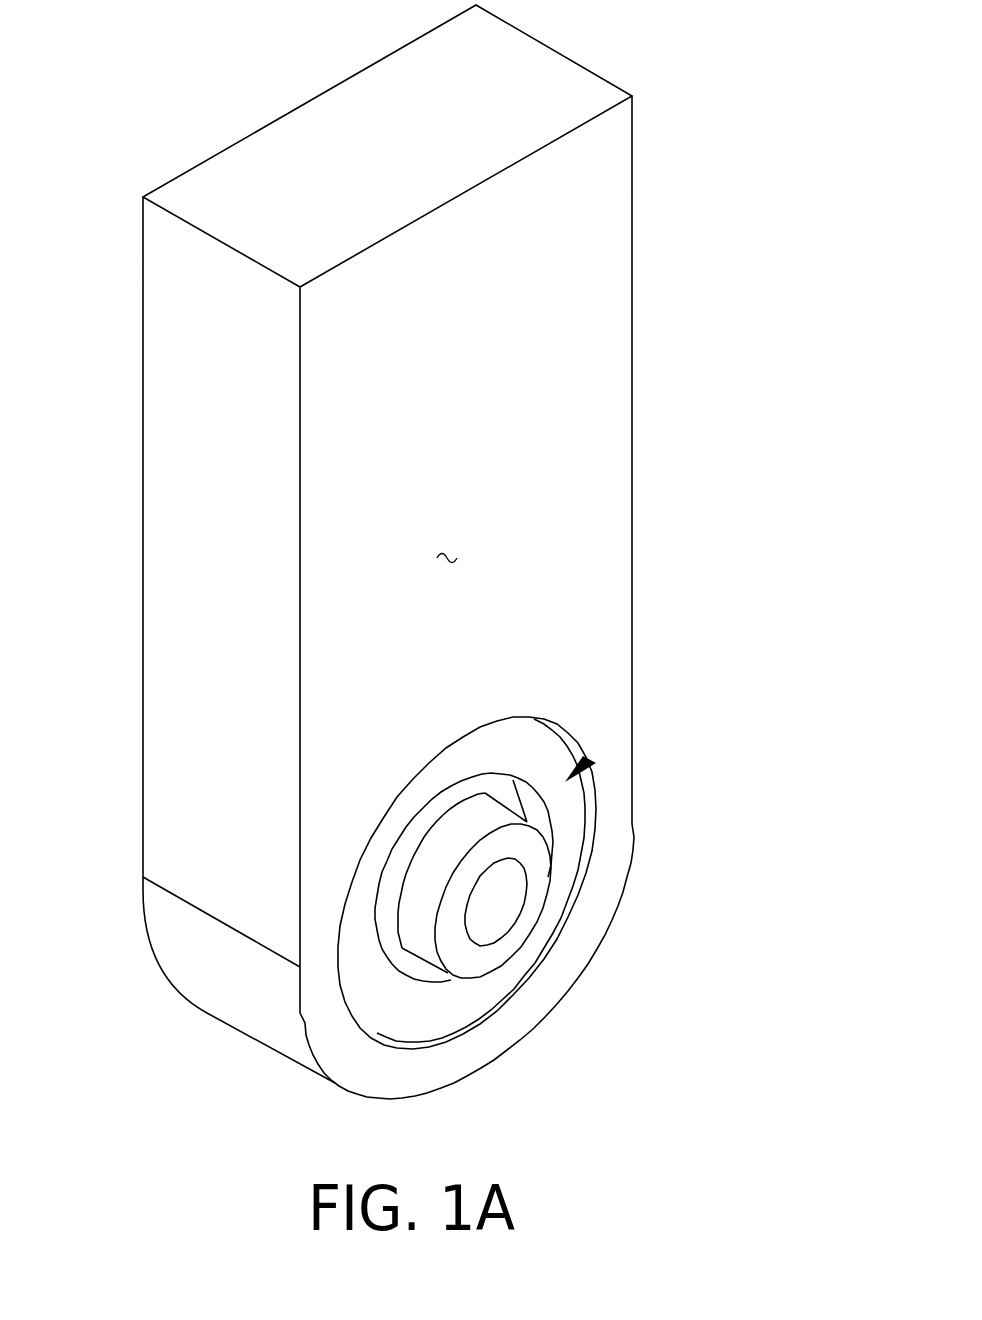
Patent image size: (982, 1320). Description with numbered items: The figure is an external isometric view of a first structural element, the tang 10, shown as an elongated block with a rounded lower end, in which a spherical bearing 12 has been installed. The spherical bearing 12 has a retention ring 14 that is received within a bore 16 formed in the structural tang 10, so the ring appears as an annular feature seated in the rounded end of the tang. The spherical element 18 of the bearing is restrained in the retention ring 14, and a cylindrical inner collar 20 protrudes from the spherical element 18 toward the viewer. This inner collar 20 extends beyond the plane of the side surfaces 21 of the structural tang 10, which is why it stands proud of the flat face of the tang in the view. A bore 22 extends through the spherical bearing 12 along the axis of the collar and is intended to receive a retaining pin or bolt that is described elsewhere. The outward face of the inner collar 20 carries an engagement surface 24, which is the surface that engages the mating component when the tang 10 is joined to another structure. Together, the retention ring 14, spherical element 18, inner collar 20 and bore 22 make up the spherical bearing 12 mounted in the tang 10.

The tang 10 is at (568, 368).
The spherical bearing 12 is at (593, 758).
The retention ring 14 is at (523, 757).
The bore 16 is at (533, 968).
The spherical element 18 is at (387, 930).
The cylindrical inner collar 20 is at (443, 863).
The side surfaces 21 is at (443, 540).
The bore 22 is at (495, 894).
The engagement surface 24 is at (540, 865).